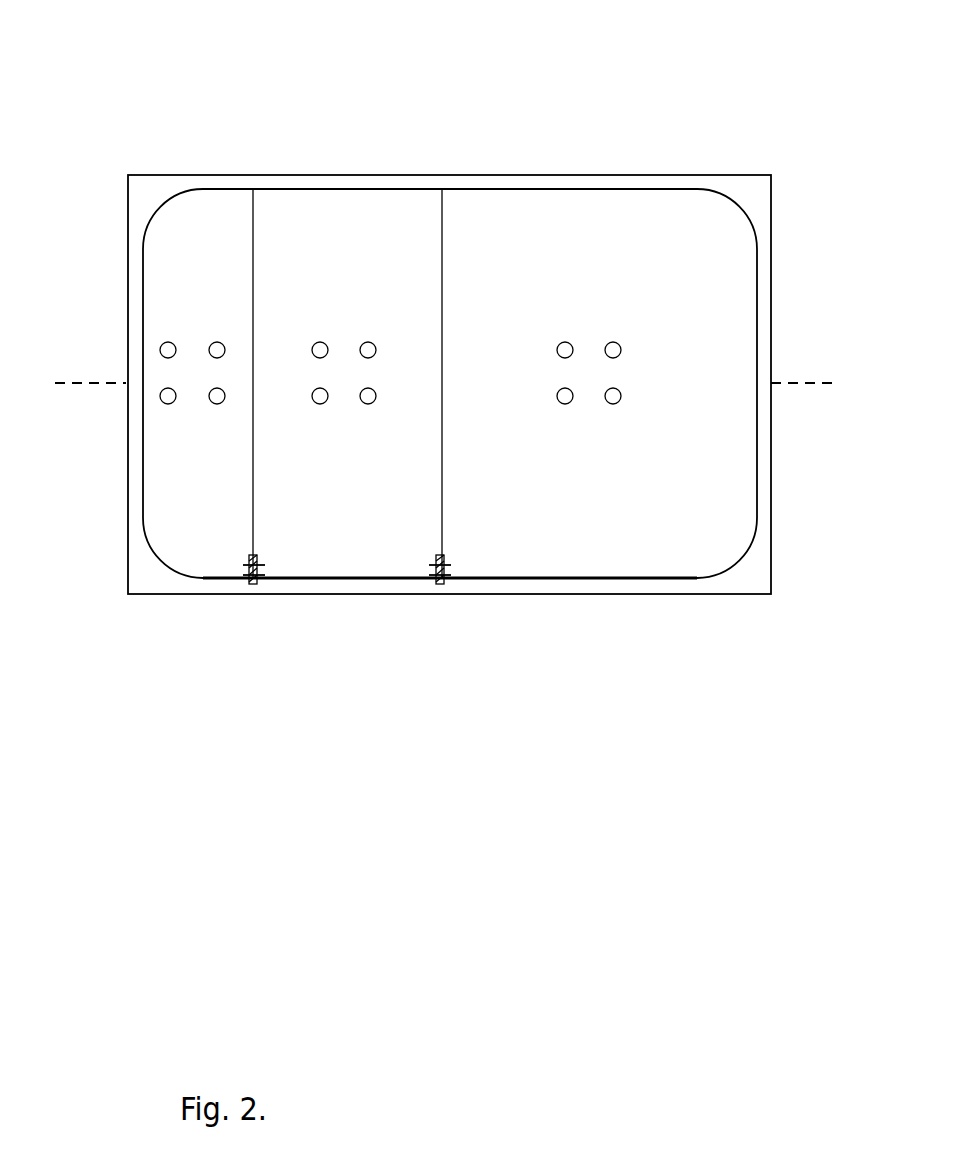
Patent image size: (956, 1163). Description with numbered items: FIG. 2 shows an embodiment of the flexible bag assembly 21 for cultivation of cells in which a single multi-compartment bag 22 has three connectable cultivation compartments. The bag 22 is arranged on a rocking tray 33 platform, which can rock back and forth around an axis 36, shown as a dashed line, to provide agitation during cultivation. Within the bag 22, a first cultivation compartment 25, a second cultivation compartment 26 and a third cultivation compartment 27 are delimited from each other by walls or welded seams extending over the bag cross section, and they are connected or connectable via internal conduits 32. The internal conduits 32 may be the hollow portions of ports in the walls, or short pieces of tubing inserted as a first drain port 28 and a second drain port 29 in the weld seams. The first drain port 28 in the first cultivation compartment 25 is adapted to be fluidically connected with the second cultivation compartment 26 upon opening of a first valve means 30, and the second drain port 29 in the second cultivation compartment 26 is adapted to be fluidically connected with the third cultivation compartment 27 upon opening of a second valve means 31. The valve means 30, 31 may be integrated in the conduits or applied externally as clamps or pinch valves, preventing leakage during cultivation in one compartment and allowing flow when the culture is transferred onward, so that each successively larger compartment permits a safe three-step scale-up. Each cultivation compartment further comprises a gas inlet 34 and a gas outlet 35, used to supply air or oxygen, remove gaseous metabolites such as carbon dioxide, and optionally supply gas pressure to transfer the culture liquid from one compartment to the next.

The flexible bag assembly 21 is at (435, 100).
The multi-compartment bag 22 is at (313, 187).
The first cultivation compartment 25 is at (195, 235).
The second cultivation compartment 26 is at (392, 217).
The third cultivation compartment 27 is at (659, 217).
The first drain port 28 is at (242, 563).
The second drain port 29 is at (427, 563).
The first valve means 30 is at (252, 580).
The second valve means 31 is at (442, 585).
The internal conduits 32 is at (347, 532).
The rocking tray 33 is at (737, 594).
The gas inlet 34 is at (557, 346).
The gas outlet 35 is at (224, 356).
The axis 36 is at (815, 385).